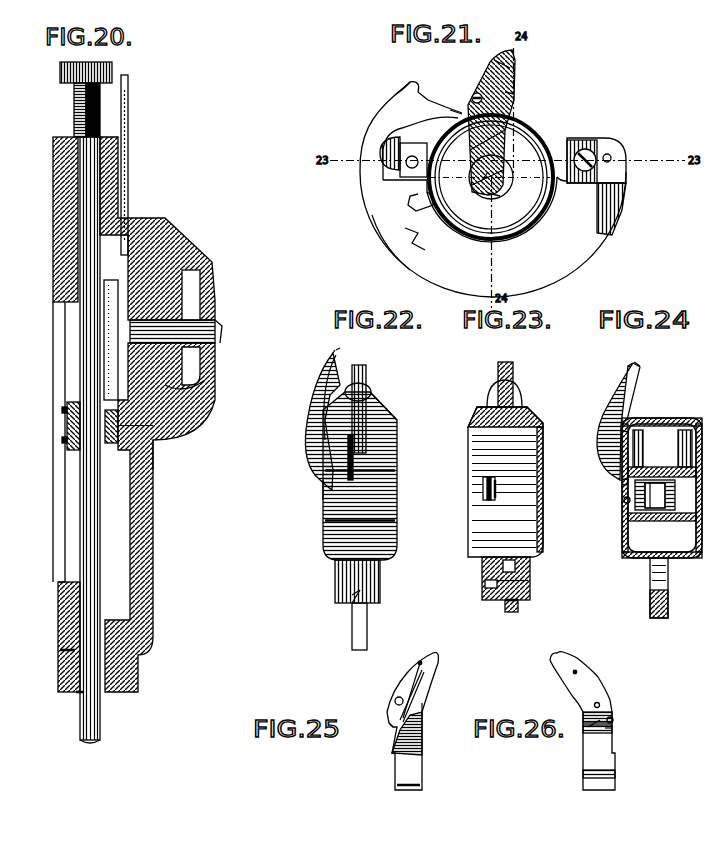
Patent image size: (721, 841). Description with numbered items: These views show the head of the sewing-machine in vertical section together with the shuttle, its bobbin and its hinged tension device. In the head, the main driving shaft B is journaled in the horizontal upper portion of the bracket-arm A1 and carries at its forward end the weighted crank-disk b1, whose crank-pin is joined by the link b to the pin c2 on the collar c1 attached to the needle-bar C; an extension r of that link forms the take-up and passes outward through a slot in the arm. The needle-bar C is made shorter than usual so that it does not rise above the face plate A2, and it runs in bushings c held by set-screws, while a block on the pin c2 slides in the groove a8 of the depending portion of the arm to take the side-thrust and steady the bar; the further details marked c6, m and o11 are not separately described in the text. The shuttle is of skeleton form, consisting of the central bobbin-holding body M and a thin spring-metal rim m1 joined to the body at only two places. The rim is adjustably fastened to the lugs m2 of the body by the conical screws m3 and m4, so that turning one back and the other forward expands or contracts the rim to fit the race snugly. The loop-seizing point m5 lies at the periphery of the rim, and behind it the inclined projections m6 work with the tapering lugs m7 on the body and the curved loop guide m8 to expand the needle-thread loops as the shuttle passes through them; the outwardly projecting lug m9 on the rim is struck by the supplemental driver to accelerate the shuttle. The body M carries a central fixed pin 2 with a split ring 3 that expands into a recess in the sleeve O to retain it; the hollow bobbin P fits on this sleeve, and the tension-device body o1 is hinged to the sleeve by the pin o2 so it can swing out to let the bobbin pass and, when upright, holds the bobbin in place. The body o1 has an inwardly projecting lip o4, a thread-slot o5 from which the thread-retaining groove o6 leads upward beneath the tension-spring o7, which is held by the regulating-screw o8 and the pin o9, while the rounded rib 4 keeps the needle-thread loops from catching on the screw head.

In FIG. 20, the take-up extension r is at (128, 140).
In FIG. 20, the main or driving shaft B is at (224, 332).
In FIG. 20, the link b is at (100, 363).
In FIG. 23, the link b is at (485, 583).
In FIG. 20, the crank-disk b1 is at (198, 388).
In FIG. 20, the bracket-arm A1 is at (218, 375).
In FIG. 20, the cap or face plate A2 is at (58, 640).
In FIG. 20, the groove a8 is at (153, 530).
In FIG. 20, the bushings c is at (80, 696).
In FIG. 20, the collar c1 is at (62, 427).
In FIG. 20, the pin c2 is at (125, 437).
In FIG. 20, the collar shoulder c6 is at (156, 462).
In FIG. 20, the needle-bar C is at (100, 722).
In FIG. 21, the central body or bobbin-holding portion M is at (501, 254).
In FIG. 22, the central body or bobbin-holding portion M is at (397, 512).
In FIG. 23, the central body or bobbin-holding portion M is at (475, 452).
In FIG. 23, the ring lug m is at (485, 592).
In FIG. 21, the rim m1 is at (393, 230).
In FIG. 22, the rim m1 is at (360, 628).
In FIG. 23, the rim m1 is at (513, 372).
In FIG. 24, the rim m1 is at (668, 603).
In FIG. 21, the lugs m2 is at (575, 138).
In FIG. 22, the lugs m2 is at (340, 583).
In FIG. 23, the lugs m2 is at (482, 566).
In FIG. 21, the screw m3 is at (580, 183).
In FIG. 21, the screw m4 is at (611, 159).
In FIG. 22, the screw m4 is at (350, 603).
In FIG. 23, the screw m4 is at (505, 603).
In FIG. 21, the loop-seizing point m5 is at (400, 90).
In FIG. 22, the loop-seizing point m5 is at (371, 392).
In FIG. 21, the inclined projections m6 is at (385, 153).
In FIG. 22, the inclined projections m6 is at (366, 378).
In FIG. 23, the inclined projections m6 is at (522, 393).
In FIG. 21, the tapering lugs m7 is at (414, 143).
In FIG. 22, the tapering lugs m7 is at (397, 418).
In FIG. 23, the tapering lugs m7 is at (470, 418).
In FIG. 21, the curved loop guide or expander m8 is at (420, 200).
In FIG. 21, the outwardly-projecting lug m9 is at (428, 250).
In FIG. 21, the hollow bobbin P is at (491, 177).
In FIG. 22, the hollow bobbin P is at (325, 493).
In FIG. 24, the hollow bobbin P is at (698, 458).
In FIG. 21, the sleeve O is at (476, 186).
In FIG. 24, the sleeve O is at (668, 490).
In FIG. 21, the rounded or inclined rib 4 is at (503, 158).
In FIG. 22, the rounded or inclined rib 4 is at (306, 445).
In FIG. 24, the rounded or inclined rib 4 is at (600, 436).
In FIG. 25, the rounded or inclined rib 4 is at (422, 732).
In FIG. 26, the rounded or inclined rib 4 is at (582, 721).
In FIG. 23, the central fixed pin or spindle 2 is at (483, 487).
In FIG. 24, the central fixed pin or spindle 2 is at (650, 505).
In FIG. 23, the split ring 3 is at (490, 500).
In FIG. 21, the body of the tension device o1 is at (490, 171).
In FIG. 24, the body of the tension device o1 is at (621, 483).
In FIG. 25, the body of the tension device o1 is at (424, 718).
In FIG. 24, the pin o2 is at (624, 502).
In FIG. 26, the inwardly-projecting lip o4 is at (597, 724).
In FIG. 21, the thread-slot o5 is at (448, 110).
In FIG. 25, the thread-slot o5 is at (390, 725).
In FIG. 26, the thread-slot o5 is at (612, 728).
In FIG. 21, the thread-retaining groove o6 is at (500, 196).
In FIG. 24, the thread-retaining groove o6 is at (628, 515).
In FIG. 25, the thread-retaining groove o6 is at (408, 702).
In FIG. 21, the tension-spring o7 is at (516, 93).
In FIG. 24, the tension-spring o7 is at (630, 370).
In FIG. 26, the tension-spring o7 is at (614, 720).
In FIG. 21, the regulating-screw o8 is at (470, 93).
In FIG. 24, the regulating-screw o8 is at (628, 432).
In FIG. 25, the regulating-screw o8 is at (395, 703).
In FIG. 26, the regulating-screw o8 is at (603, 702).
In FIG. 21, the pin o9 is at (492, 64).
In FIG. 22, the pin o9 is at (330, 380).
In FIG. 25, the pin o9 is at (437, 668).
In FIG. 26, the pin o9 is at (577, 672).
In FIG. 22, the pawl tip edge o11 is at (338, 352).